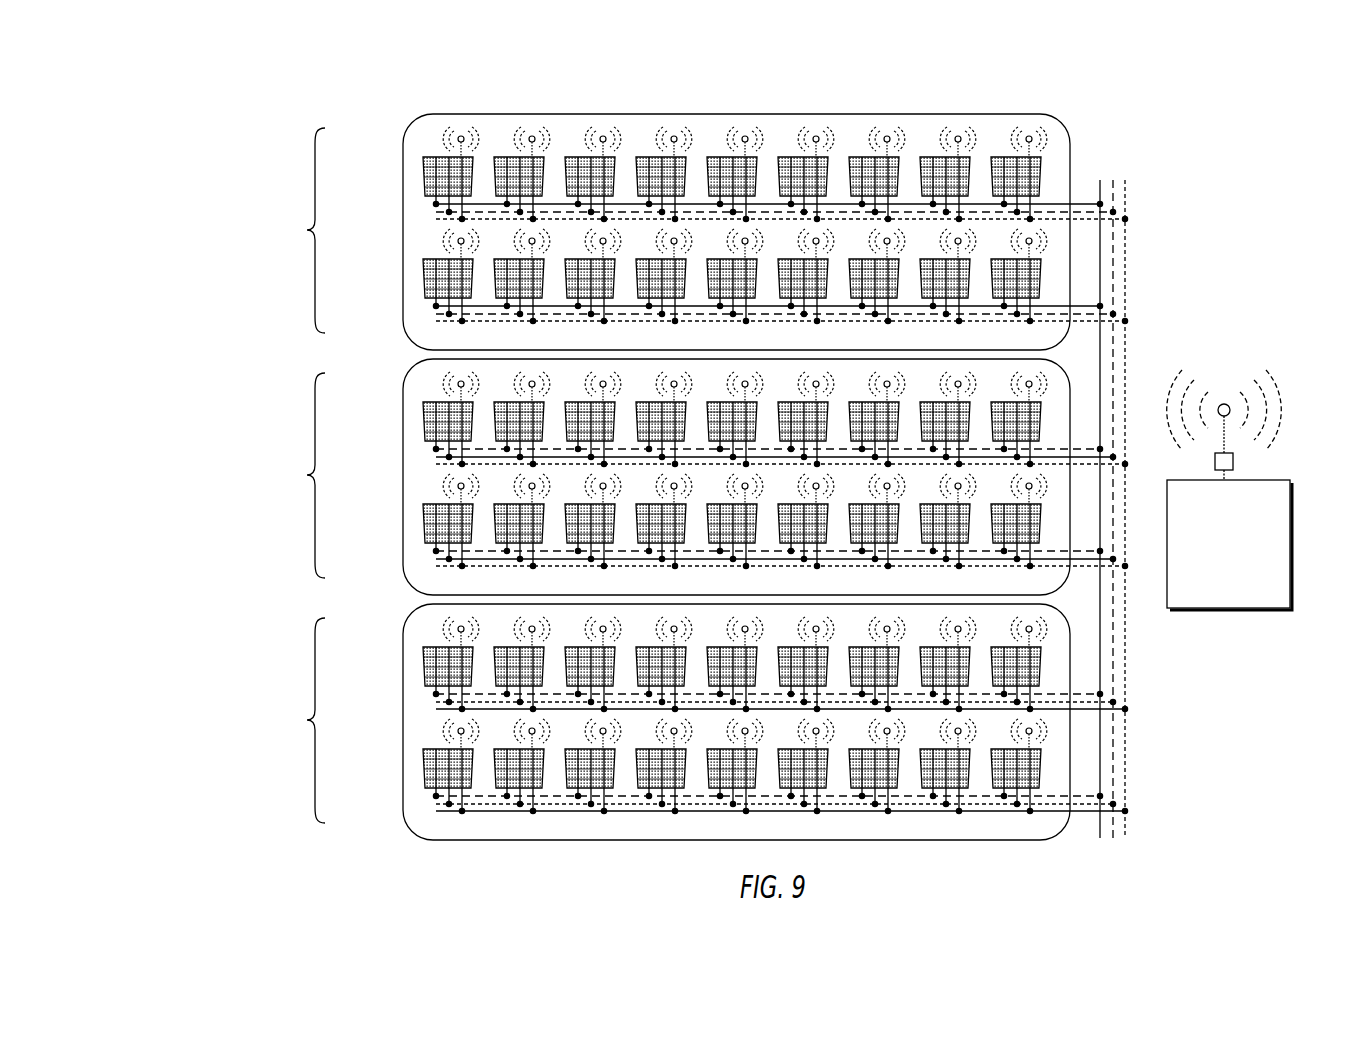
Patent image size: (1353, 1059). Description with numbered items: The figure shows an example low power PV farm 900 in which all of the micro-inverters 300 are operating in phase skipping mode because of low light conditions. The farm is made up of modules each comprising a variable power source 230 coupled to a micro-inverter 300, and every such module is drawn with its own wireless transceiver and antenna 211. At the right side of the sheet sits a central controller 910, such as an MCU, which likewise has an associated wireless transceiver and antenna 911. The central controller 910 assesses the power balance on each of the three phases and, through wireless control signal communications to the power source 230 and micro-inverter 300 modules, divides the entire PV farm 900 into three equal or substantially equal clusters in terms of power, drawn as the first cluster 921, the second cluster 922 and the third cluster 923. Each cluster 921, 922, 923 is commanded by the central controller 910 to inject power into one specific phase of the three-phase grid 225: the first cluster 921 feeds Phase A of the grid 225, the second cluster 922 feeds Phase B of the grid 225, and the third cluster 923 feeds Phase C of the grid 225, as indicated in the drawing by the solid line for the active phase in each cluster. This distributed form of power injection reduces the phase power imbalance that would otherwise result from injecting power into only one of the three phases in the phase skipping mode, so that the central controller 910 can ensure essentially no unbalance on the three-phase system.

The low power PV farm 900 is at (1043, 100).
The grid 225 is at (1130, 125).
The cluster 1 921 is at (403, 222).
The cluster 2 922 is at (403, 467).
The cluster 3 923 is at (403, 712).
The variable power source 230 is at (435, 802).
The micro-inverter 300 is at (435, 802).
The wireless transceiver and antenna 211 is at (463, 745).
The central controller 910 is at (1228, 609).
The wireless transceiver and antenna 911 is at (1277, 436).